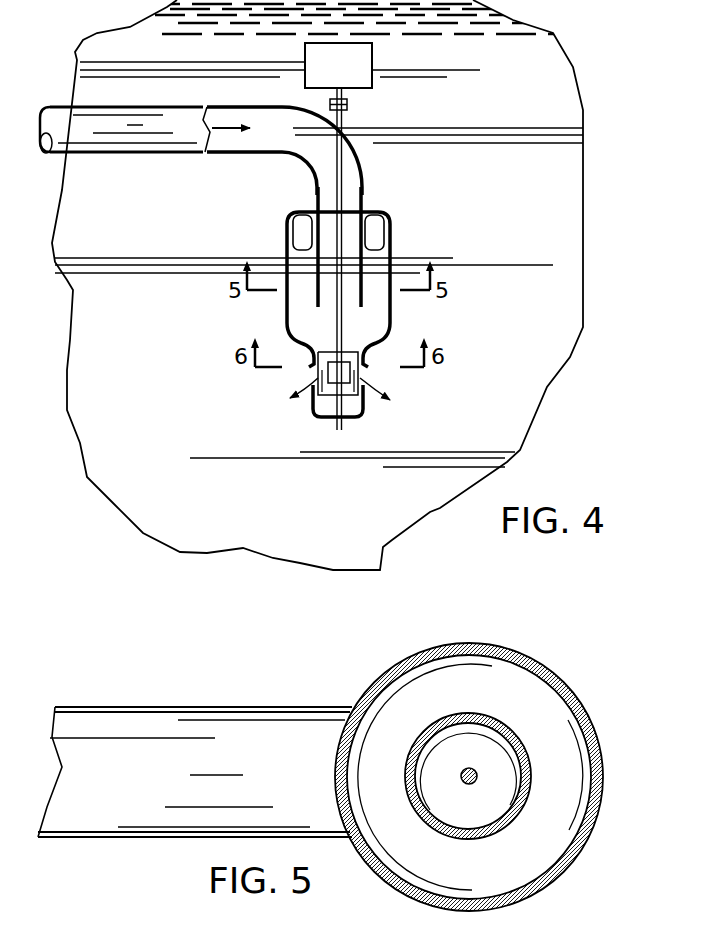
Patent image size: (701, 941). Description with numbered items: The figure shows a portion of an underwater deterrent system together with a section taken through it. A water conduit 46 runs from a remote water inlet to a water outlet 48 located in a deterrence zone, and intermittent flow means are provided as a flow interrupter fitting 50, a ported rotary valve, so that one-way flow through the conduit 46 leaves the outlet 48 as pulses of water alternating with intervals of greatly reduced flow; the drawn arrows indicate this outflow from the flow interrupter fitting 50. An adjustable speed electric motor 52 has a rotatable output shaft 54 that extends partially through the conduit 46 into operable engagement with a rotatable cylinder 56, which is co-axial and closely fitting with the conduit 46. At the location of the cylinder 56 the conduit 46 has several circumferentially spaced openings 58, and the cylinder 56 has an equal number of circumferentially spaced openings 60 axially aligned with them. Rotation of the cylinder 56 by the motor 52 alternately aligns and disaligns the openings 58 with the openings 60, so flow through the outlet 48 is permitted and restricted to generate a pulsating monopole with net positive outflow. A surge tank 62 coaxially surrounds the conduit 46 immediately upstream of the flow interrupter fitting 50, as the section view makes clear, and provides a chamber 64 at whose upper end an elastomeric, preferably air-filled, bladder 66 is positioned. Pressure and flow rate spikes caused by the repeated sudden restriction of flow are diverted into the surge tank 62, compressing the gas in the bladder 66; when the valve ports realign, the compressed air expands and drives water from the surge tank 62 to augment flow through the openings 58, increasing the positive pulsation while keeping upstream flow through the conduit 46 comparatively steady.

In FIG. 4, the water conduit 46 is at (148, 107).
In FIG. 5, the water conduit 46 is at (180, 707).
In FIG. 4, the water outlet 48 is at (362, 377).
In FIG. 4, the flow interrupter fitting 50 is at (360, 404).
In FIG. 4, the adjustable speed electric motor 52 is at (372, 52).
In FIG. 4, the rotatable output shaft 54 is at (342, 117).
In FIG. 5, the rotatable output shaft 54 is at (469, 768).
In FIG. 4, the rotatable cylinder 56 is at (318, 367).
In FIG. 4, the circumferentially spaced openings 58 is at (363, 367).
In FIG. 4, the circumferentially spaced openings 60 is at (347, 366).
In FIG. 4, the surge tank 62 is at (394, 252).
In FIG. 5, the surge tank 62 is at (598, 758).
In FIG. 4, the chamber 64 is at (294, 308).
In FIG. 5, the chamber 64 is at (552, 730).
In FIG. 4, the bladder 66 is at (387, 232).
In FIG. 5, the bladder 66 is at (533, 684).